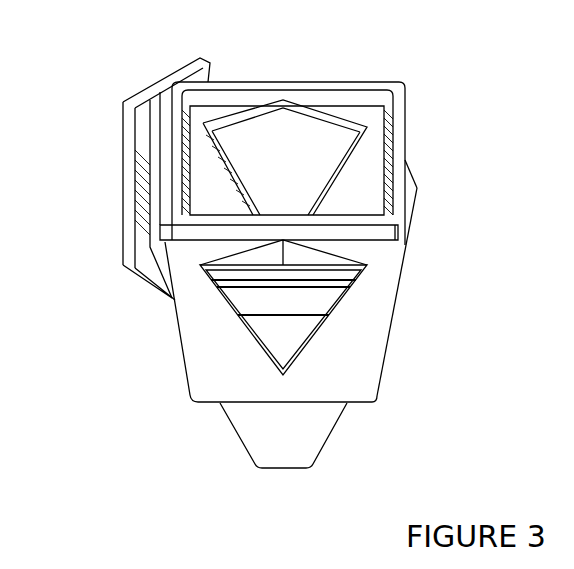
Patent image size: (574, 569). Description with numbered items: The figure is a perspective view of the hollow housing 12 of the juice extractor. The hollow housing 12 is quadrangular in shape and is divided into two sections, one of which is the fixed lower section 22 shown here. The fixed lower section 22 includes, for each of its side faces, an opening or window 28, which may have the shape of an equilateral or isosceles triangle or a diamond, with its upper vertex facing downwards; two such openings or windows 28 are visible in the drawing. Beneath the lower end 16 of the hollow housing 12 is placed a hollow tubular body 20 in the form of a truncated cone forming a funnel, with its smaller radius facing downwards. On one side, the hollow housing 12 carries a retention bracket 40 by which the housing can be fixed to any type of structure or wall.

The hollow housing 12 is at (405, 280).
The lower end 16 is at (367, 398).
The hollow tubular body 20 is at (260, 425).
The fixed lower section 22 is at (367, 367).
The opening or window 28 is at (224, 175).
The retention bracket 40 is at (118, 173).